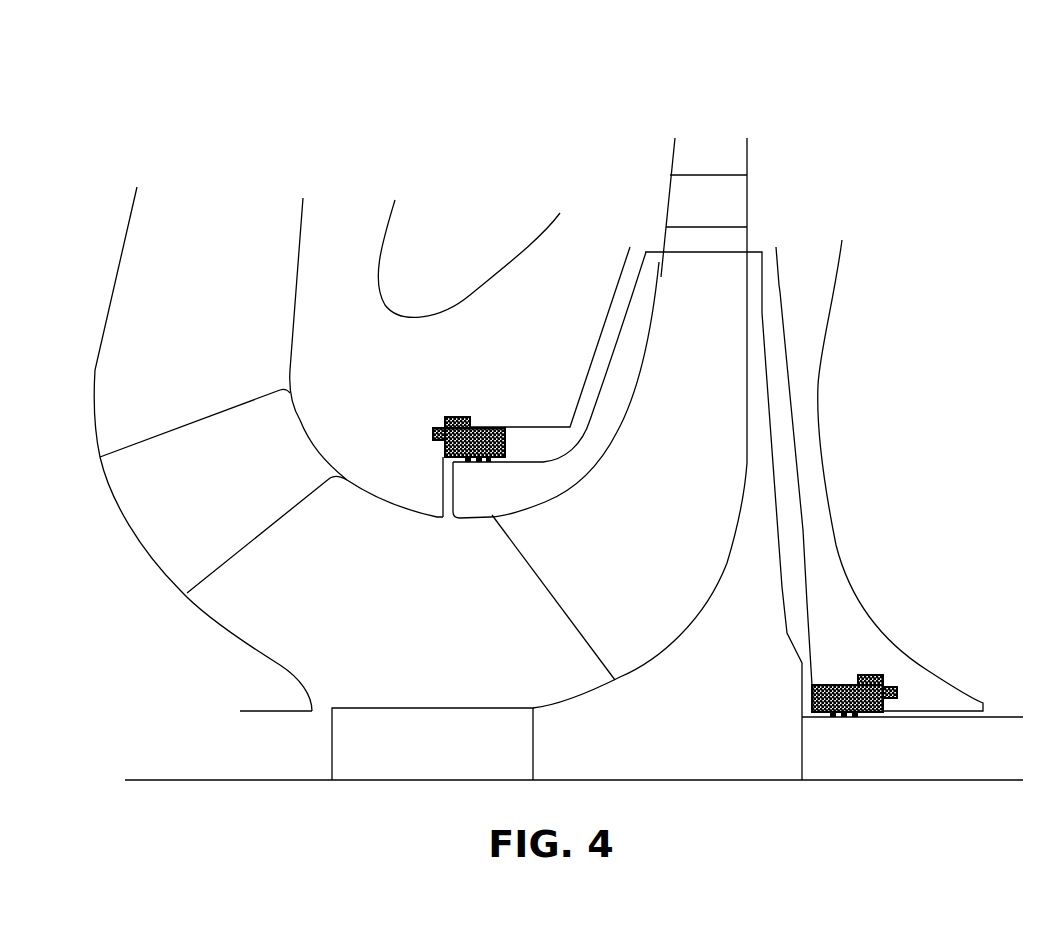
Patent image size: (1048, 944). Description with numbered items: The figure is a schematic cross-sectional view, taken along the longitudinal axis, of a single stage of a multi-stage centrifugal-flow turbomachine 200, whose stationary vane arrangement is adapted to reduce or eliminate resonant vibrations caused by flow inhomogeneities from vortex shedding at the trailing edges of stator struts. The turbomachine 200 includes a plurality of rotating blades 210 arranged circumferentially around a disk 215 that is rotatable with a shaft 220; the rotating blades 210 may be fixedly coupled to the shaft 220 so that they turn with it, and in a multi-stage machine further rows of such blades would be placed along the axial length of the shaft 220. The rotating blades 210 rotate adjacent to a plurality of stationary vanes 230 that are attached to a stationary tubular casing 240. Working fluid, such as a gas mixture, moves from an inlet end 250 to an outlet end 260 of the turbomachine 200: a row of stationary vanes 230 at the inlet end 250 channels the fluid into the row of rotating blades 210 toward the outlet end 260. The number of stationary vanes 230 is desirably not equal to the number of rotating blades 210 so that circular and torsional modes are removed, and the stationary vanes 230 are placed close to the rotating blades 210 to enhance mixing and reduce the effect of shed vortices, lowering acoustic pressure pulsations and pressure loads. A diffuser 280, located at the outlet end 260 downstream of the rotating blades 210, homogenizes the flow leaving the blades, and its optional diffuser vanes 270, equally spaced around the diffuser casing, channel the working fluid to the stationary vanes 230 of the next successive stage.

The turbomachine 200 is at (565, 80).
The rotating blades 210 is at (638, 489).
The disk 215 is at (686, 706).
The shaft 220 is at (411, 751).
The stationary vanes 230 is at (228, 489).
The stationary tubular casing 240 is at (315, 418).
The inlet end 250 is at (217, 188).
The outlet end 260 is at (710, 113).
The diffuser vanes 270 is at (718, 208).
The diffuser 280 is at (763, 208).